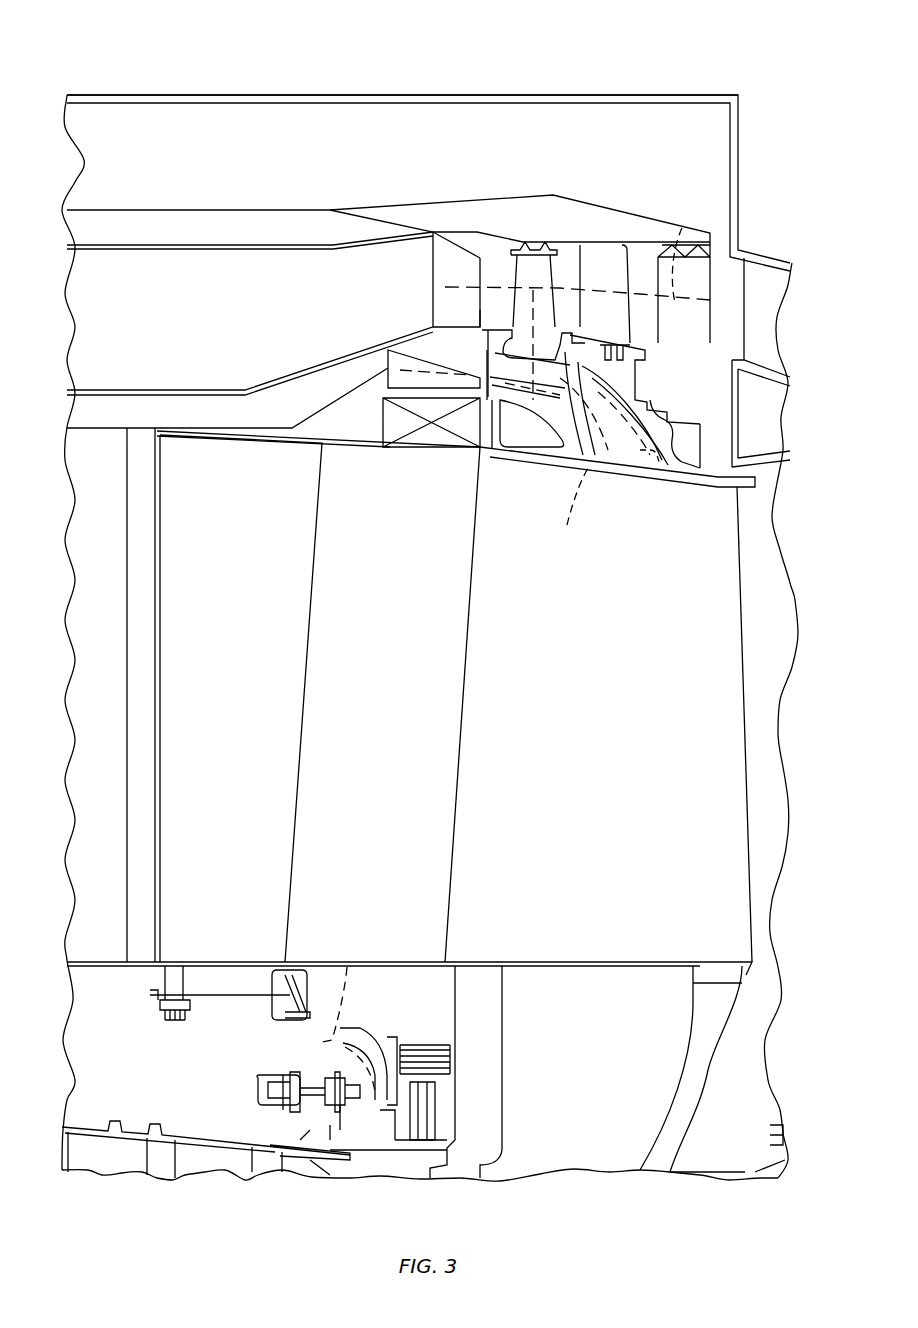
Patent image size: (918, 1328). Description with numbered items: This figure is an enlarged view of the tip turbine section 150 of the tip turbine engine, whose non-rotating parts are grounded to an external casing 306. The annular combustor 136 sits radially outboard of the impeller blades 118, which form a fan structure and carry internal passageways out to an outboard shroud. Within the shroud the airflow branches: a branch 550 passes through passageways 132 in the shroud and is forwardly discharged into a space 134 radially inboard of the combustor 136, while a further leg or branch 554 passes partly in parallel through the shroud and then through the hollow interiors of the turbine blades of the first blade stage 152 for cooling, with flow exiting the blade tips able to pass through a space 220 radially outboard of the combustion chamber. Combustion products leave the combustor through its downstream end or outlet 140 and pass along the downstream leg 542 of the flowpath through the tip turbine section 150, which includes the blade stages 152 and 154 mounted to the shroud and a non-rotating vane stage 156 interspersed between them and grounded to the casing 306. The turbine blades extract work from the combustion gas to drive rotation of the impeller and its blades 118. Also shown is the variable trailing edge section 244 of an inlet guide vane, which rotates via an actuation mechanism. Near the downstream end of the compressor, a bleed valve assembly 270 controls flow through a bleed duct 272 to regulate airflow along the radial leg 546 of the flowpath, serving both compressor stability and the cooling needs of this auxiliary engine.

The external casing 306 is at (540, 95).
The combustor 136 is at (264, 304).
The space 220 is at (222, 238).
The downstream end/outlet 140 is at (439, 281).
The blade stage 152 is at (539, 271).
The tip turbine section 150 is at (601, 234).
The non-rotating vane stage 156 is at (614, 274).
The downstream leg 542 is at (682, 228).
The blade stage 154 is at (690, 266).
The space 134 is at (240, 410).
The passageways 132 is at (596, 470).
The branch 550 is at (564, 507).
The leg/branch 554 is at (654, 470).
The variable trailing edge section 244 is at (210, 691).
The blades 118 is at (582, 733).
The radial leg/branch 546 is at (347, 967).
The bleed duct 272 is at (375, 1060).
The bleed valve assembly 270 is at (226, 1092).